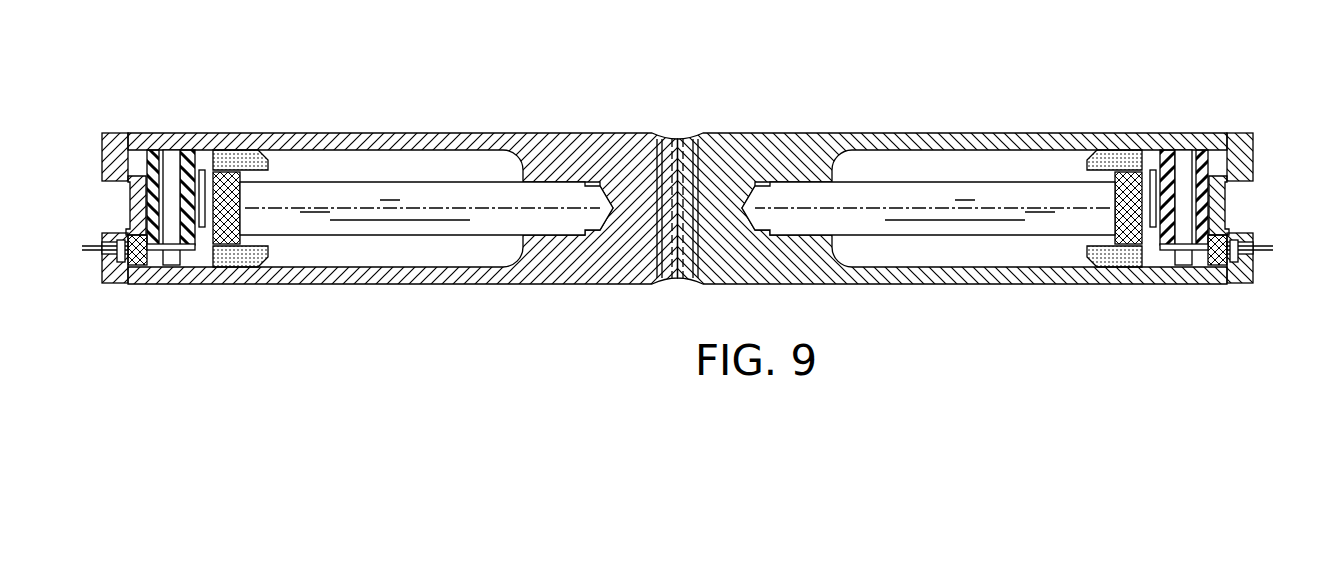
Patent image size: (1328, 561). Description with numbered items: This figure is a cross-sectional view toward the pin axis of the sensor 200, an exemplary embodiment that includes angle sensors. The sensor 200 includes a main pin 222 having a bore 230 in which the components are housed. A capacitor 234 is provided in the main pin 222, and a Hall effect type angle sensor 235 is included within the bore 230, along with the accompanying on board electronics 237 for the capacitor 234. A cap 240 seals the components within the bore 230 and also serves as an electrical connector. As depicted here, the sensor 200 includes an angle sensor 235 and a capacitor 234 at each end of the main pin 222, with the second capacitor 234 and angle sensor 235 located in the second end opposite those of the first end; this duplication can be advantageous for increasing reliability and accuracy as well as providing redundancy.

The sensor 200 is at (483, 108).
The main pin 222 is at (893, 132).
The bore 230 is at (410, 167).
The capacitor 234 is at (282, 160).
The angle sensor 235 is at (137, 213).
The on board electronics 237 is at (170, 137).
The cap 240 is at (112, 137).